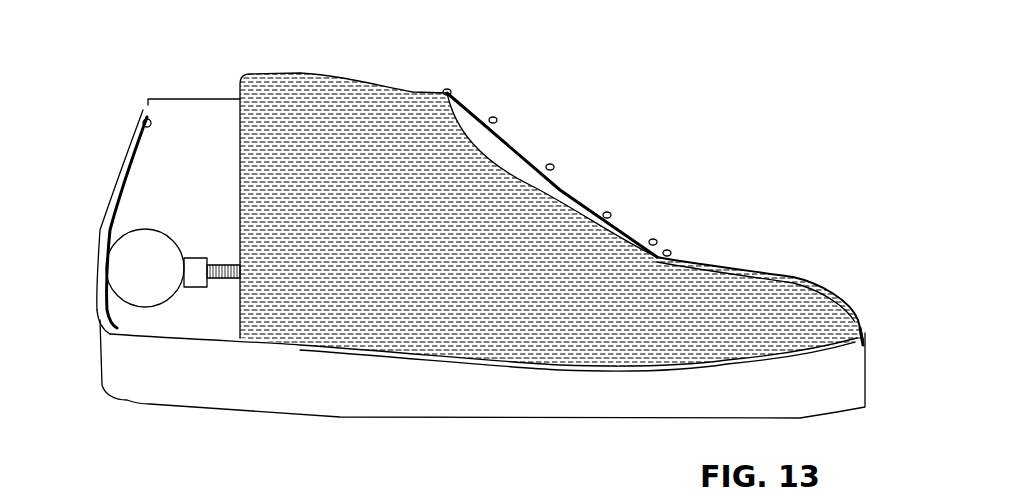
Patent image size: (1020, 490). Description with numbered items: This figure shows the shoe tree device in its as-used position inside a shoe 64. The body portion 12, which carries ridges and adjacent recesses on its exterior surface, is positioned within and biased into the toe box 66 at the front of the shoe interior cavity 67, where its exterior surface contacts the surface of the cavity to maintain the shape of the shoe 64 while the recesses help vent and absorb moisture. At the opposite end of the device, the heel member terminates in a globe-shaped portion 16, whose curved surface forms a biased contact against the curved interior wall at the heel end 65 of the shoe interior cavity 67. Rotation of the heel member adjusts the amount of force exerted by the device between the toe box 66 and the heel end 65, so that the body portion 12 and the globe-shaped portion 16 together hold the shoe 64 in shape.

The body portion 12 is at (263, 318).
The globe-shaped portion 16 is at (128, 283).
The shoe 64 is at (790, 390).
The heel end 65 is at (137, 173).
The toe box 66 is at (860, 342).
The shoe interior cavity 67 is at (197, 128).